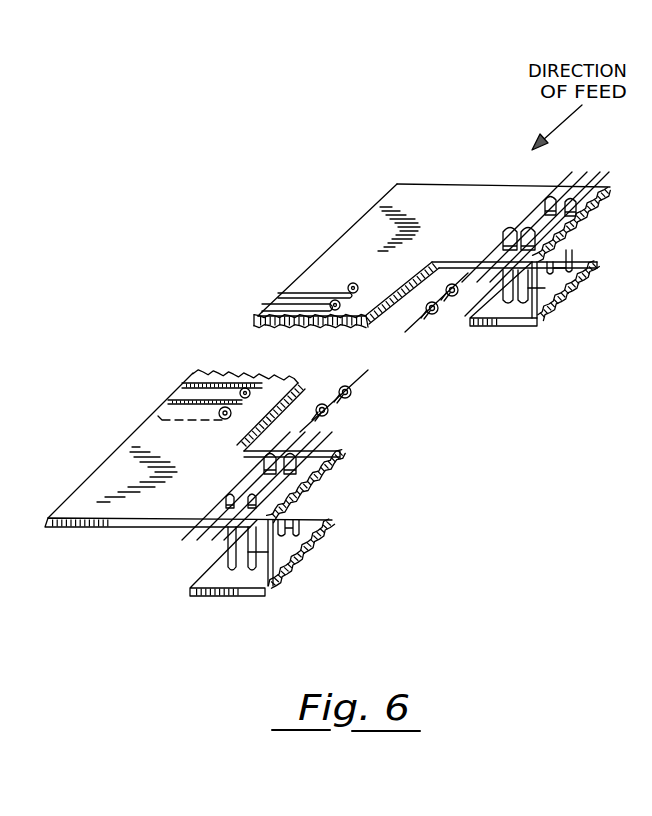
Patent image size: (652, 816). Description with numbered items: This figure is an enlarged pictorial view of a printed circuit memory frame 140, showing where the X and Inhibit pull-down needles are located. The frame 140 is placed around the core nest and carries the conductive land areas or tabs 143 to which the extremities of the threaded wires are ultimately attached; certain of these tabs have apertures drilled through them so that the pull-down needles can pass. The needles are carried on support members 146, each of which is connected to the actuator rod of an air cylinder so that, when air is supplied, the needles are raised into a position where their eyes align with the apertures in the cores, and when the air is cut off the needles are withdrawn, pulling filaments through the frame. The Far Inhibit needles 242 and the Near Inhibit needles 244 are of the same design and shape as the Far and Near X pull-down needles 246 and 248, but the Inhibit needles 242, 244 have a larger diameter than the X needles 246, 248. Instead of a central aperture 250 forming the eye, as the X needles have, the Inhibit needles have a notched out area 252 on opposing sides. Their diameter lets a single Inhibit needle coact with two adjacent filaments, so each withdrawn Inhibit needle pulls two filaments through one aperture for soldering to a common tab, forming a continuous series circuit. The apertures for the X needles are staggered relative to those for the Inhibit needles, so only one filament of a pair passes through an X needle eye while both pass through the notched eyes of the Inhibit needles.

The printed circuit frame 140 is at (351, 232).
The conductive land areas or tabs 143 is at (263, 312).
The support member 146 is at (541, 313).
The Far Inhibit needles 242 is at (524, 229).
The Near Inhibit needles 244 is at (262, 462).
The Far X pull-down needles 246 is at (567, 198).
The Near X pull-down needles 248 is at (231, 494).
The central aperture 250 is at (545, 203).
The notched out area 252 is at (505, 239).